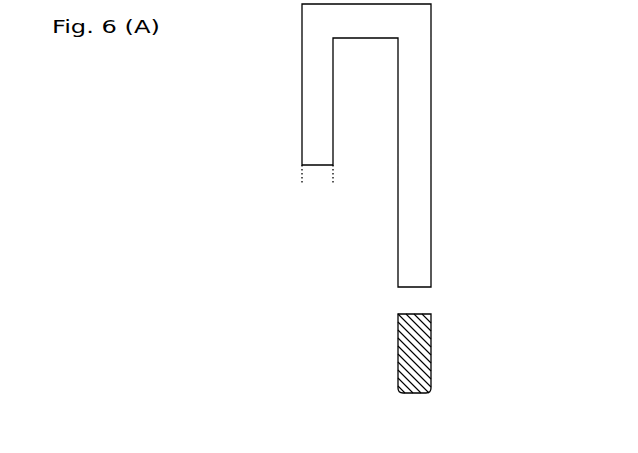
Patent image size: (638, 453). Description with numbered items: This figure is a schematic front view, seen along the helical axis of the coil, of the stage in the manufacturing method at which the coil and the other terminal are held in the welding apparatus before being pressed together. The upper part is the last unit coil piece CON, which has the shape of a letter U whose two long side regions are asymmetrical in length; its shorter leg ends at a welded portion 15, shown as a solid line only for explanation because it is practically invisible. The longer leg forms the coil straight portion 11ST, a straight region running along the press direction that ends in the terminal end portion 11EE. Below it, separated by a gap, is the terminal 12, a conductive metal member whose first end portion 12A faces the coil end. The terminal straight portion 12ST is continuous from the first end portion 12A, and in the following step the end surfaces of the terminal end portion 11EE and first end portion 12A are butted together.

The last unit coil piece CON is at (431, 190).
The welded portion 15 is at (310, 167).
The coil straight portion 11ST is at (478, 248).
The terminal end portion 11EE is at (414, 287).
The terminal 12 is at (398, 366).
The first end portion 12A is at (398, 314).
The terminal straight portion 12ST is at (431, 333).